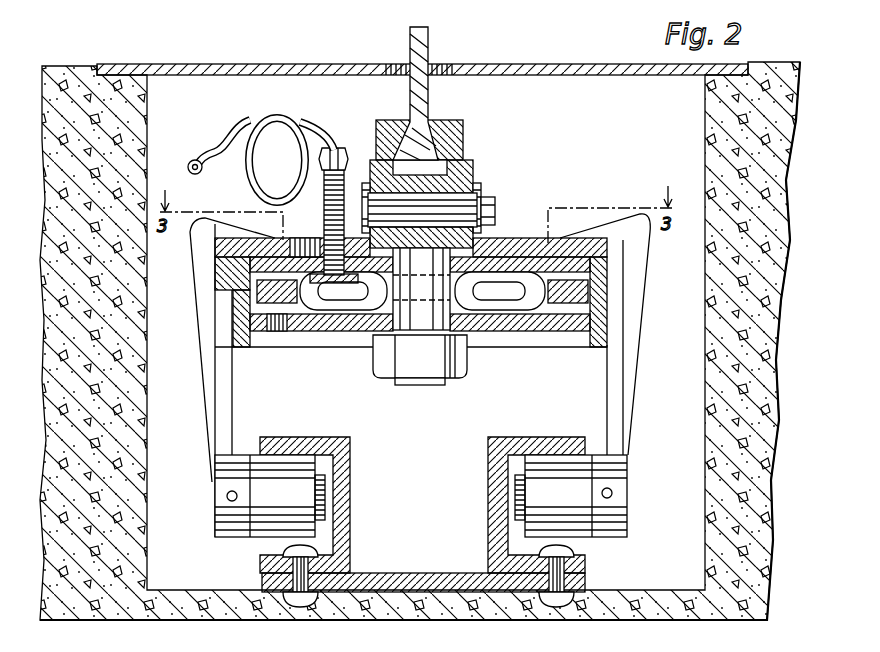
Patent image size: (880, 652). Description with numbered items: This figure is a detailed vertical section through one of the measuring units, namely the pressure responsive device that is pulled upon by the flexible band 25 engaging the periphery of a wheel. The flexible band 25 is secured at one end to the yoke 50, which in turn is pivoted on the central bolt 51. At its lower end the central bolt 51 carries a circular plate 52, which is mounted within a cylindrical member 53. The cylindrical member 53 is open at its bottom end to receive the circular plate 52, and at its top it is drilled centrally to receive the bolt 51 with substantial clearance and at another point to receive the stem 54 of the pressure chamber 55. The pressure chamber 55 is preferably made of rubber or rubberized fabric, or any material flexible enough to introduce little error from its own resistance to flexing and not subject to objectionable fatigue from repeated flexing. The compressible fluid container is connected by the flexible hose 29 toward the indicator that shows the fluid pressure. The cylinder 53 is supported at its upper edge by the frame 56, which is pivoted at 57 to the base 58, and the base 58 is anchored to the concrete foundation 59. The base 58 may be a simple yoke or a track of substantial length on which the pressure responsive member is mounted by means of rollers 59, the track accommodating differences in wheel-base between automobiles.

The flexible band 25 is at (430, 42).
The flexible hose 29 is at (242, 118).
The yoke 50 is at (465, 131).
The central bolt 51 is at (445, 383).
The circular plate 52 is at (504, 332).
The cylindrical member 53 is at (268, 344).
The stem 54 is at (323, 214).
The pressure chamber 55 is at (347, 300).
The frame 56 is at (202, 308).
The pivot 57 is at (614, 498).
The base 58 is at (350, 537).
The rollers 59 is at (262, 538).